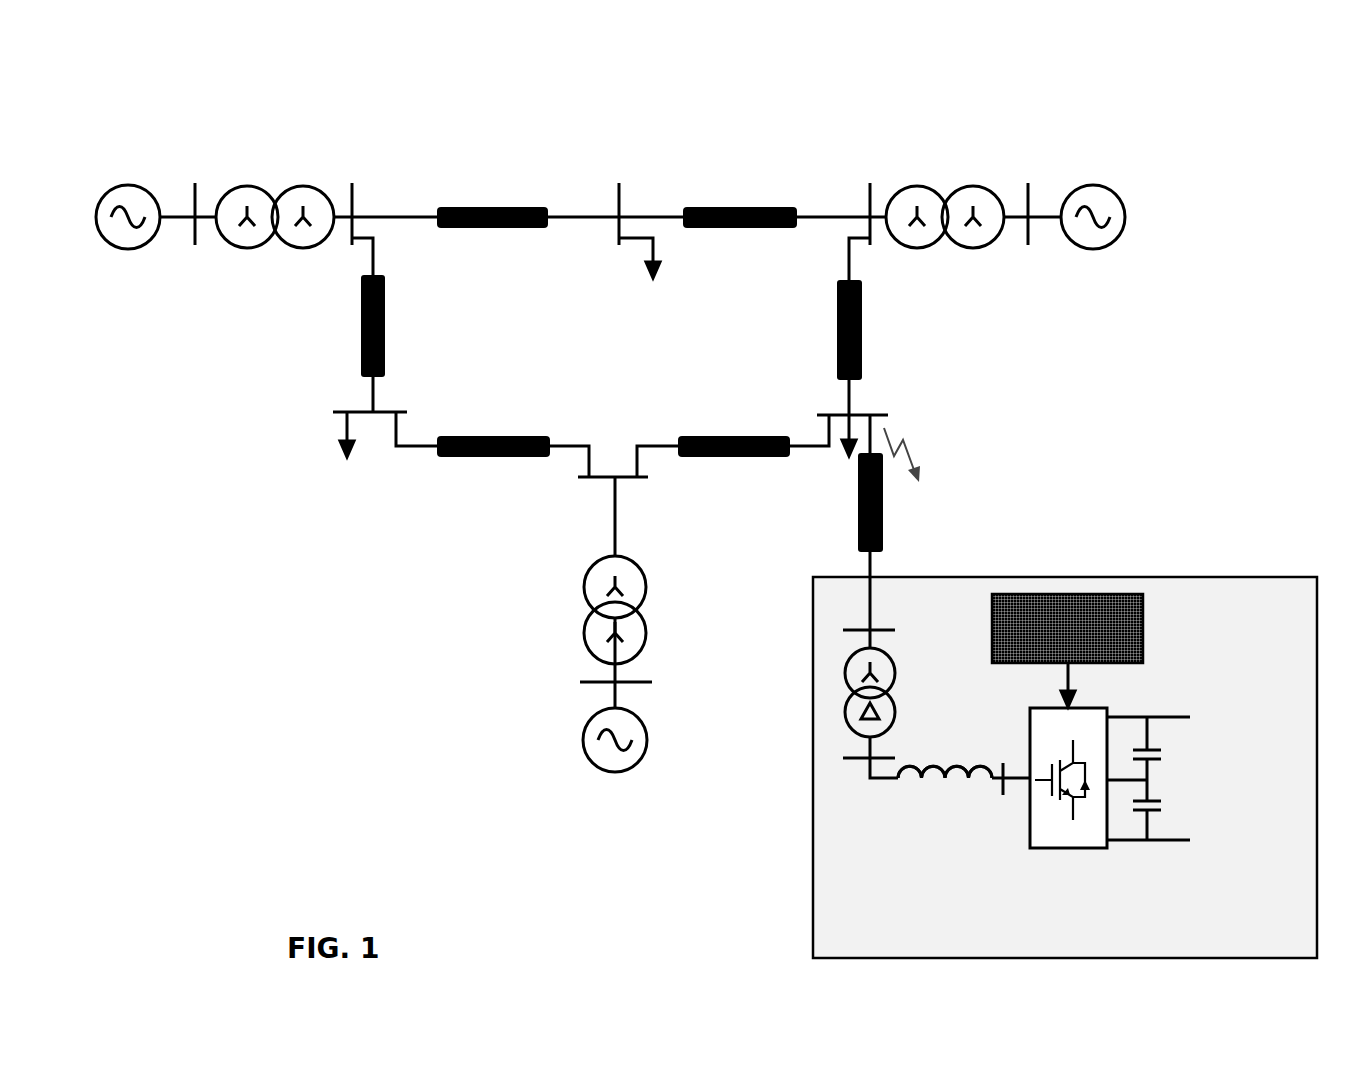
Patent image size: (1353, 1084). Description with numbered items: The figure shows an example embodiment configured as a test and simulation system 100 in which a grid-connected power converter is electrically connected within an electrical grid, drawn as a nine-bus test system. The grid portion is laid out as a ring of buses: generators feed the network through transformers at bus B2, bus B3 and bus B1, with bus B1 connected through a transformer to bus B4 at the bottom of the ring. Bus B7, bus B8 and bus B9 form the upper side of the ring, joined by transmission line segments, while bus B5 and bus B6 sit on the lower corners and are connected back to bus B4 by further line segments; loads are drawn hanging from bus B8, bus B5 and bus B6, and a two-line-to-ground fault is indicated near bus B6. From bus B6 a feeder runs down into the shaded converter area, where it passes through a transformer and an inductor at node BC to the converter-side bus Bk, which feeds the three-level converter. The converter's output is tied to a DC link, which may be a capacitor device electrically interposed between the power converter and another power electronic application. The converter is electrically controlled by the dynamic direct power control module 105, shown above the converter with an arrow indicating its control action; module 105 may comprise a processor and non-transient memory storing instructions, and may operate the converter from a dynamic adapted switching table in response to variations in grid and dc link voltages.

The test and simulation system 100 is at (1272, 66).
The dynamic direct power control module 105 is at (1036, 656).
The bus B1 is at (638, 685).
The bus B2 is at (196, 202).
The bus B3 is at (1026, 202).
The bus B4 is at (635, 489).
The bus B5 is at (349, 413).
The bus B6 is at (835, 411).
The bus B7 is at (354, 202).
The bus B8 is at (627, 202).
The bus B9 is at (877, 202).
The converter-side inductor BC is at (945, 764).
The converter bus Bk is at (1006, 768).